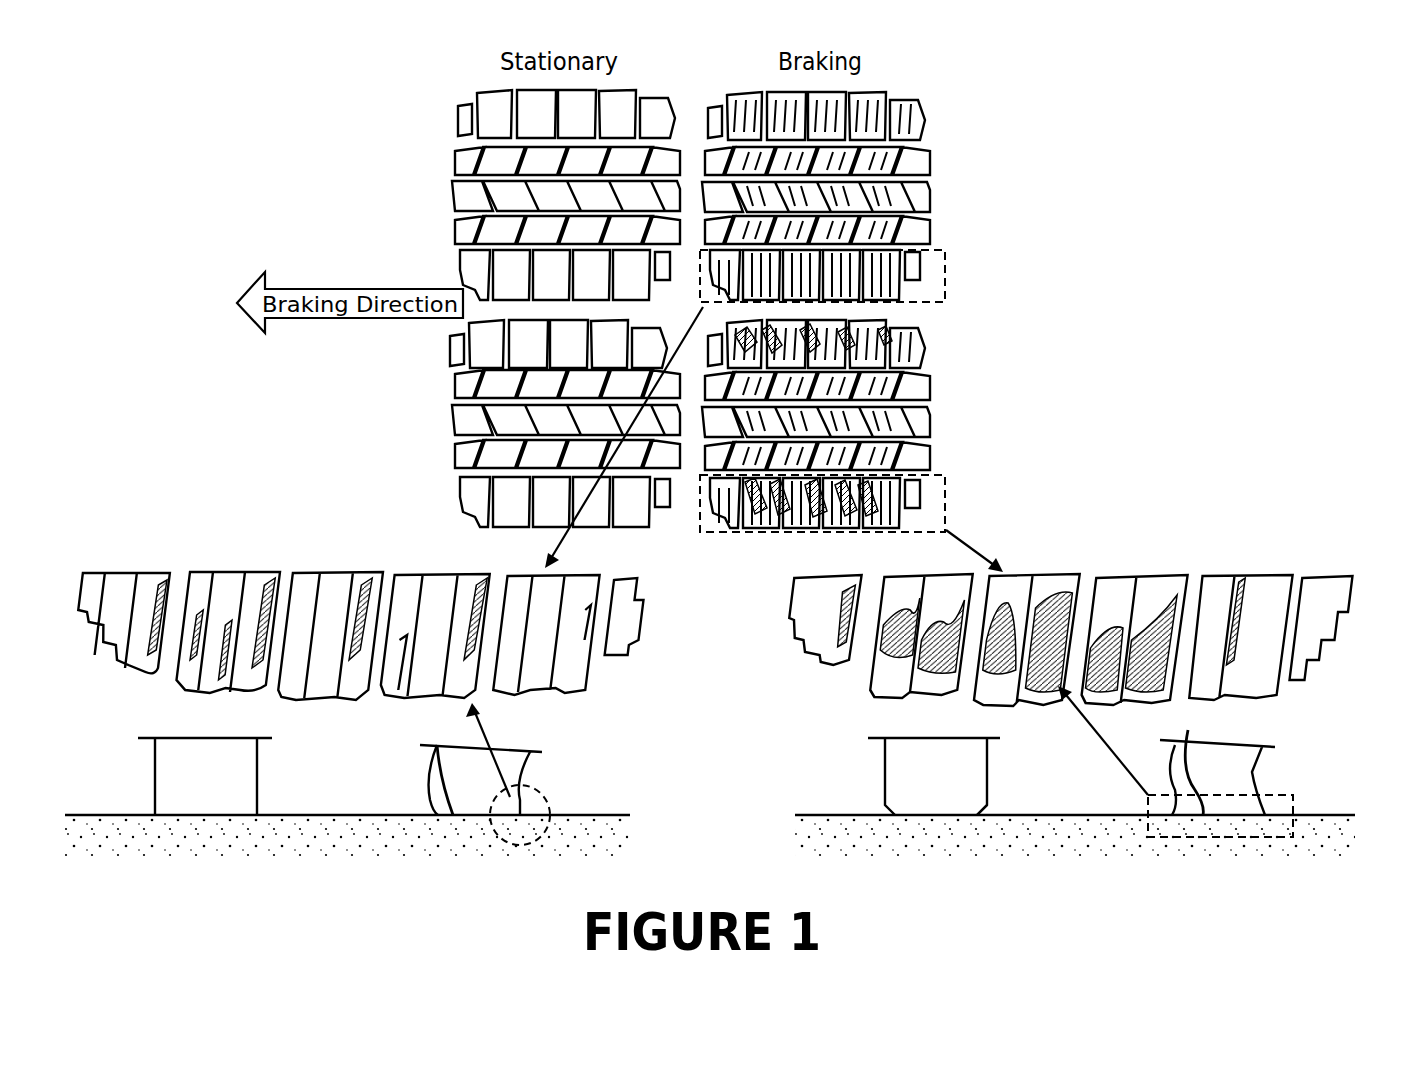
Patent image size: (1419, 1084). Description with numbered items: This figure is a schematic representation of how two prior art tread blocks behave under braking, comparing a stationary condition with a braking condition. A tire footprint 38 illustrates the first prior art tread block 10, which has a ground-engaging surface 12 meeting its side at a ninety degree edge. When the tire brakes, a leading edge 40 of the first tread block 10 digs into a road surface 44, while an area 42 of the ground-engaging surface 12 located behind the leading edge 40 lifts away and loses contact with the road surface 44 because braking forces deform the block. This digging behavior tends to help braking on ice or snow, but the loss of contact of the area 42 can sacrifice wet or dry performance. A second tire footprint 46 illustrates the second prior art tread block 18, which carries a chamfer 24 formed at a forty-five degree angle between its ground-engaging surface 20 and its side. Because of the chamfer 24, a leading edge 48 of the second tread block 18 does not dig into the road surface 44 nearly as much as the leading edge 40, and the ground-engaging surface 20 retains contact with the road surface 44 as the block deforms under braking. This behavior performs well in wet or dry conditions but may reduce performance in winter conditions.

The tire footprint 38 is at (915, 105).
The tire footprint 46 is at (935, 493).
The first prior art tread block 10 is at (262, 772).
The ground-engaging surface 12 is at (437, 745).
The area 42 is at (425, 810).
The leading edge 40 is at (480, 650).
The road surface 44 is at (610, 815).
The second prior art tread block 18 is at (995, 765).
The chamfer 24 is at (980, 802).
The ground-engaging surface 20 is at (1187, 760).
The leading edge 48 is at (1265, 815).